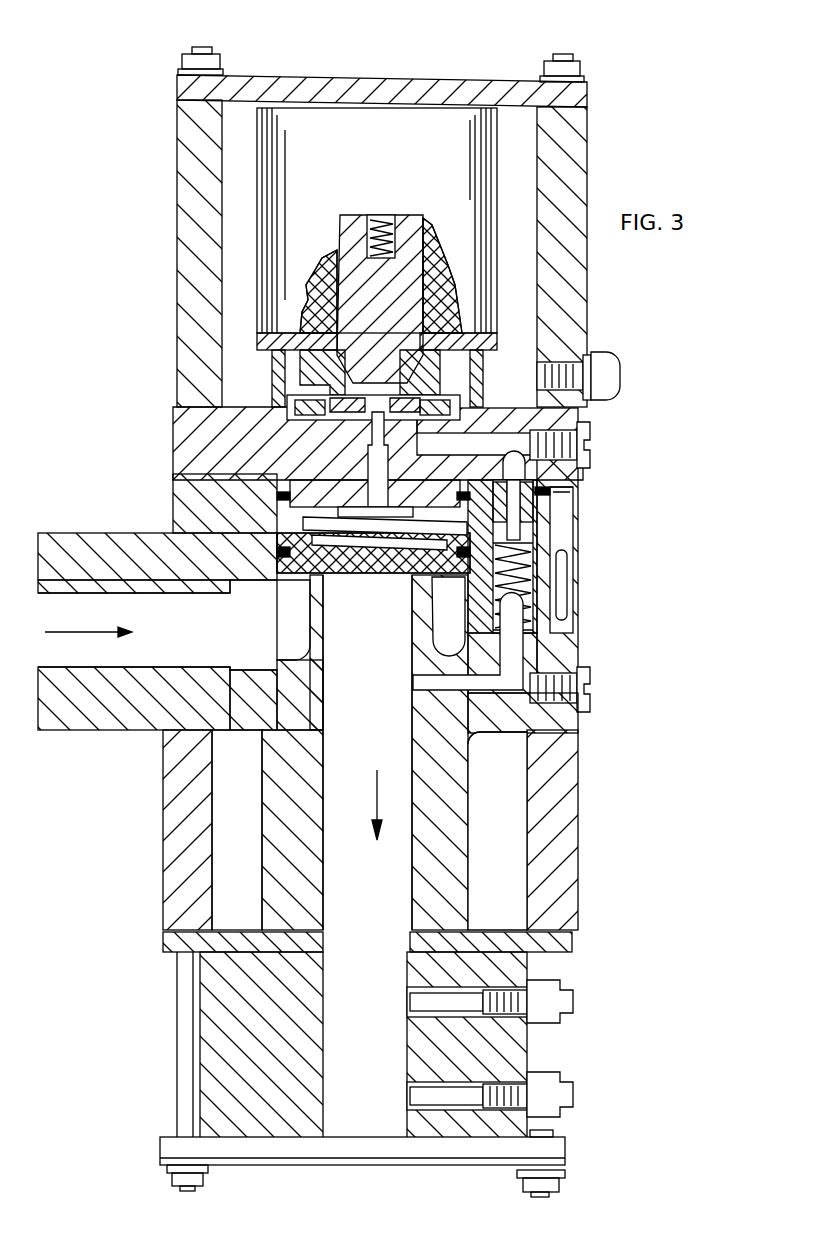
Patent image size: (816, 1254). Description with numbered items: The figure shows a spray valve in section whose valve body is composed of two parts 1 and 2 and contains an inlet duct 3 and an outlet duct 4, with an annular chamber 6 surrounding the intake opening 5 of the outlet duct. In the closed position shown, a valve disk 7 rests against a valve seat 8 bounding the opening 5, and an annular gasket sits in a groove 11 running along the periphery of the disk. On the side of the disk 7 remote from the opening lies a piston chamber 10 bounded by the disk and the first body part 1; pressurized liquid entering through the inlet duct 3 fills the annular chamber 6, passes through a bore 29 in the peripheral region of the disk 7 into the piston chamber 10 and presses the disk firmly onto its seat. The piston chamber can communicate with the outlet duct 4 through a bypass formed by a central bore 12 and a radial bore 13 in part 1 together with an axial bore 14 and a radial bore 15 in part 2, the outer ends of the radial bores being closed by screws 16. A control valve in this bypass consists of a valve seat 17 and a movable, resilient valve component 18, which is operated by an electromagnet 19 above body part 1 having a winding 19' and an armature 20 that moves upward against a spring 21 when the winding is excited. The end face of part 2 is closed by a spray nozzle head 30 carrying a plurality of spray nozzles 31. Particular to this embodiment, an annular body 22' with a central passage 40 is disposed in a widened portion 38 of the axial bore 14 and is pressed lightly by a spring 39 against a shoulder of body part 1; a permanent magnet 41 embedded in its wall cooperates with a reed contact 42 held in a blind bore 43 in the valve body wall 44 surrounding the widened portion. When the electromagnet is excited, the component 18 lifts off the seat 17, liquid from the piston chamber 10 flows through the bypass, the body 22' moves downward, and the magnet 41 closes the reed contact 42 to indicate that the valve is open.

The first part of the valve body 1 is at (188, 430).
The second part of the valve body 2 is at (185, 497).
The inlet duct 3 is at (150, 645).
The outlet duct 4 is at (385, 677).
The intake opening 5 is at (413, 580).
The annular chamber 6 is at (490, 745).
The valve disk 7 is at (312, 535).
The valve seat 8 is at (337, 583).
The piston chamber 10 is at (305, 520).
The groove 11 is at (283, 552).
The central bore 12 is at (340, 510).
The radial bore 13 is at (487, 440).
The axial bore 14 is at (515, 665).
The radial bore 15 is at (487, 736).
The screws 16 is at (590, 430).
The valve seat 17 is at (393, 430).
The movable, resilient valve component 18 is at (455, 330).
The electromagnet 19 is at (377, 187).
The winding 19' is at (313, 287).
The armature 20 is at (348, 242).
The spring 21 is at (381, 222).
The annular body 22' is at (602, 559).
The bore 29 is at (283, 565).
The spray nozzle head 30 is at (250, 1048).
The spray nozzles 31 is at (573, 1080).
The widened portion 38 is at (530, 553).
The spring 39 is at (530, 615).
The central passage 40 is at (515, 510).
The permanent magnet 41 is at (540, 515).
The reed contact 42 is at (563, 590).
The blind bore 43 is at (585, 480).
The valve body wall 44 is at (572, 645).